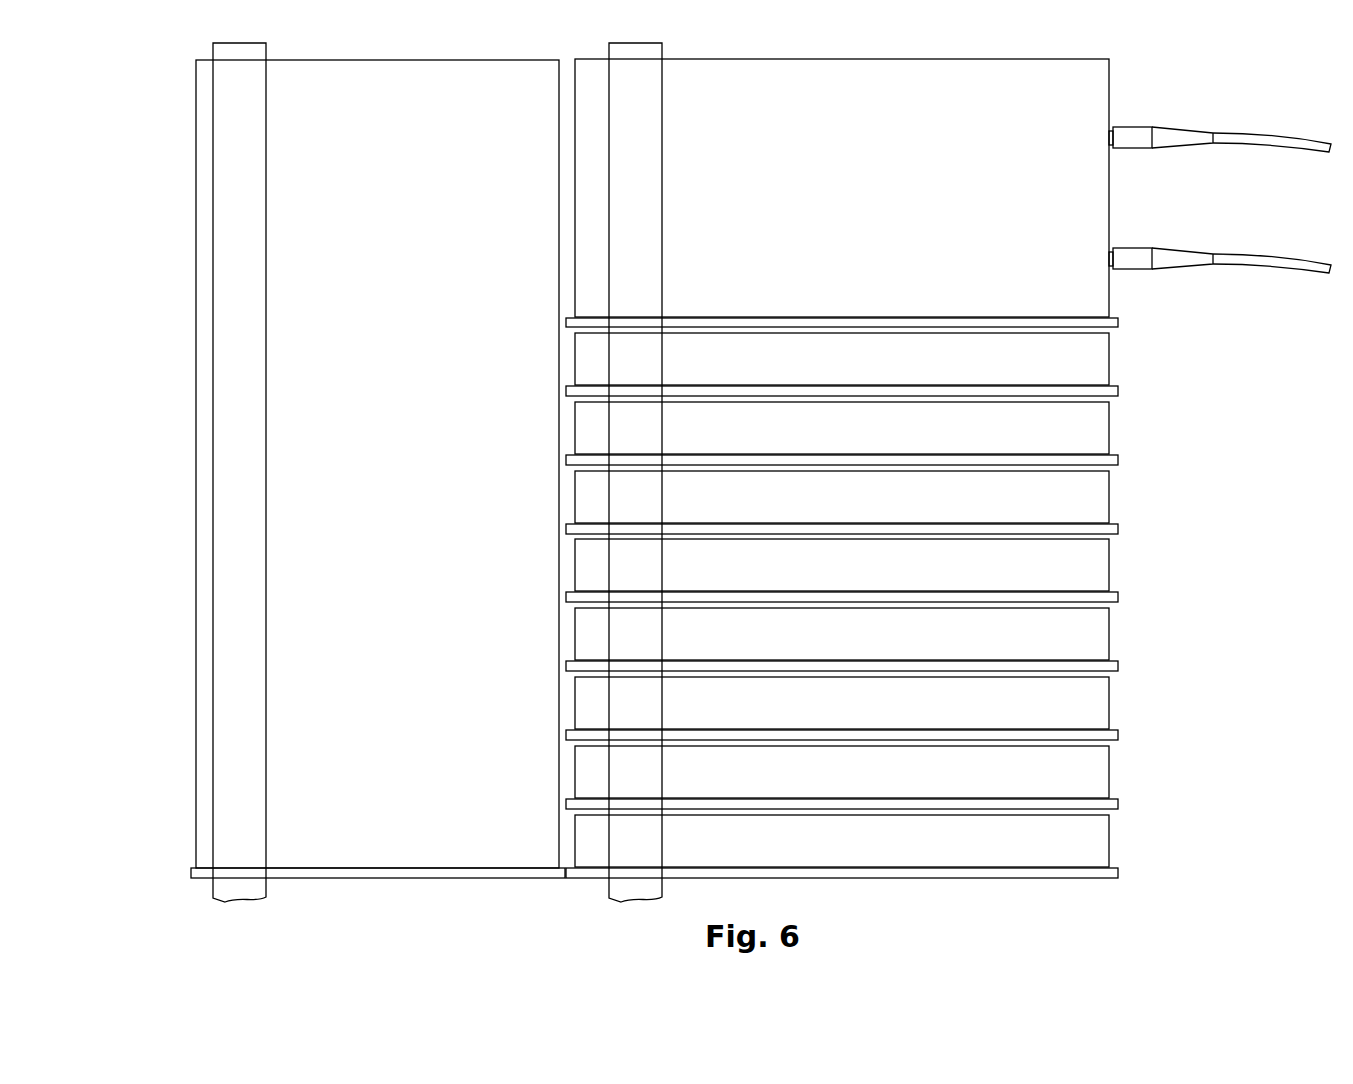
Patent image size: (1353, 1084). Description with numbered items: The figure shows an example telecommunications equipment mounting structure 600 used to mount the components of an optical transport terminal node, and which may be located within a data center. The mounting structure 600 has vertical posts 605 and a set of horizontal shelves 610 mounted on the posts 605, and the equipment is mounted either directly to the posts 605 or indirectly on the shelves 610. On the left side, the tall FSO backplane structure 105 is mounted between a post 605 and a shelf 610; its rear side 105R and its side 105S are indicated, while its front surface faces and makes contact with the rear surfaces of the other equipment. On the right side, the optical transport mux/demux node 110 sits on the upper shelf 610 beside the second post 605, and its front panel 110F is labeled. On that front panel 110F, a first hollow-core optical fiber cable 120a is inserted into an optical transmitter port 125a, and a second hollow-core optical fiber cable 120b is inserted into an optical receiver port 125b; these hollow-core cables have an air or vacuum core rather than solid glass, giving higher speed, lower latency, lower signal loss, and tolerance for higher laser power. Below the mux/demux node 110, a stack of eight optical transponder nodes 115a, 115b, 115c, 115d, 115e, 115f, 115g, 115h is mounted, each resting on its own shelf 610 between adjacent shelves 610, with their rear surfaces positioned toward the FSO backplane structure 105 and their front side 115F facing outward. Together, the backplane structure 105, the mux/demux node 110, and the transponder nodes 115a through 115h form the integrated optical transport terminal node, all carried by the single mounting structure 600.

The telecommunications equipment mounting structure 600 is at (1214, 912).
The FSO backplane structure 105 is at (377, 464).
The rear side of FSO backplane structure 105R is at (170, 150).
The side of FSO backplane structure 105S is at (412, 858).
The posts 605 is at (437, 472).
The shelves 610 is at (191, 872).
The optical transport mux/demux node 110 is at (842, 188).
The front panel of the optical transport mux/demux node 110F is at (1128, 78).
The first hollow-core optical fiber cable 120a is at (1200, 106).
The second hollow-core optical fiber cable 120b is at (1200, 226).
The optical transmitter port 125a is at (1112, 150).
The optical receiver port 125b is at (1112, 271).
The optical transponder node 115a is at (842, 359).
The optical transponder node 115b is at (842, 428).
The optical transponder node 115c is at (842, 497).
The optical transponder node 115d is at (842, 565).
The optical transponder node 115e is at (842, 634).
The optical transponder node 115f is at (842, 703).
The optical transponder node 115g is at (842, 772).
The optical transponder node 115h is at (842, 841).
The front of optical transponder node 115F is at (1128, 357).